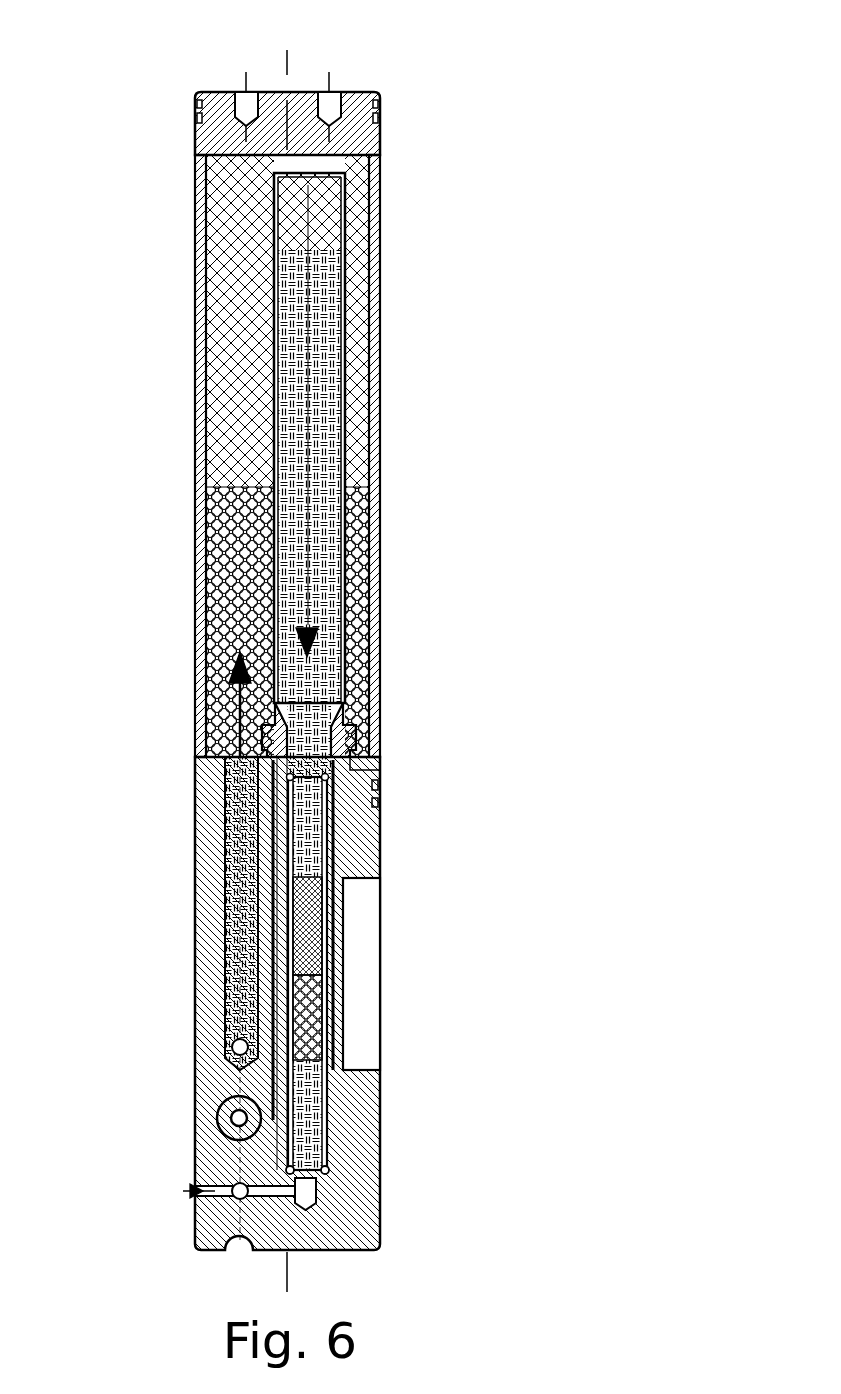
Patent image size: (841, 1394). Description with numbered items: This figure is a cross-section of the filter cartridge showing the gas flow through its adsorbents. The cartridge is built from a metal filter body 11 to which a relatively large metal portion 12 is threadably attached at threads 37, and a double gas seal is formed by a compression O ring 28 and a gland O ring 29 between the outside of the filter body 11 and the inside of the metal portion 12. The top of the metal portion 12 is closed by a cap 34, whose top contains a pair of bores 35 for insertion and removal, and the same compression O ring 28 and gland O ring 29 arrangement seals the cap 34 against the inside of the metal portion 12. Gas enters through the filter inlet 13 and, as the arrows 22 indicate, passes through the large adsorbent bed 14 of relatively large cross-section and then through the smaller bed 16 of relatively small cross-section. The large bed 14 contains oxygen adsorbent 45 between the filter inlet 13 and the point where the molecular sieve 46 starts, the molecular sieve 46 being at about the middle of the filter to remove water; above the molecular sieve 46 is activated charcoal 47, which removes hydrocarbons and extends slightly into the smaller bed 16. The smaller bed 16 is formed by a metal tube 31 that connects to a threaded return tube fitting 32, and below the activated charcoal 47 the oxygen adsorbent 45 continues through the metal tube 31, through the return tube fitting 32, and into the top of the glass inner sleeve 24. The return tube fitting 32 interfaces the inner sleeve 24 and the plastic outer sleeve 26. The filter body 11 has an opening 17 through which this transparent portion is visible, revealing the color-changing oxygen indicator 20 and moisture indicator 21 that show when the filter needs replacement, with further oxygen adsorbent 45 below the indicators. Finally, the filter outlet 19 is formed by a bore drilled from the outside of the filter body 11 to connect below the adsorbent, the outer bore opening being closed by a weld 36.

The filter body 11 is at (207, 950).
The relatively large metal portion 12 is at (383, 243).
The filter inlet 13 is at (228, 1043).
The large adsorbent bed 14 is at (240, 365).
The smaller bed 16 is at (318, 395).
The filter body opening 17 is at (368, 942).
The filter outlet 19 is at (237, 1197).
The oxygen indicator 20 is at (305, 935).
The moisture indicator 21 is at (333, 1020).
The arrows 22 is at (318, 635).
The glass inner sleeve 24 is at (325, 1050).
The plastic outer sleeve 26 is at (330, 995).
The compression O ring 28 is at (383, 100).
The gland O ring 29 is at (383, 117).
The metal tube 31 is at (345, 320).
The threaded return tube fitting 32 is at (348, 715).
The cap 34 is at (360, 92).
The bore 35 is at (245, 92).
The weld at outlet 36 is at (192, 1190).
The threaded portion 37 is at (373, 770).
The oxygen adsorbent 45 is at (322, 520).
The molecular sieve 46 is at (232, 570).
The activated charcoal 47 is at (325, 205).